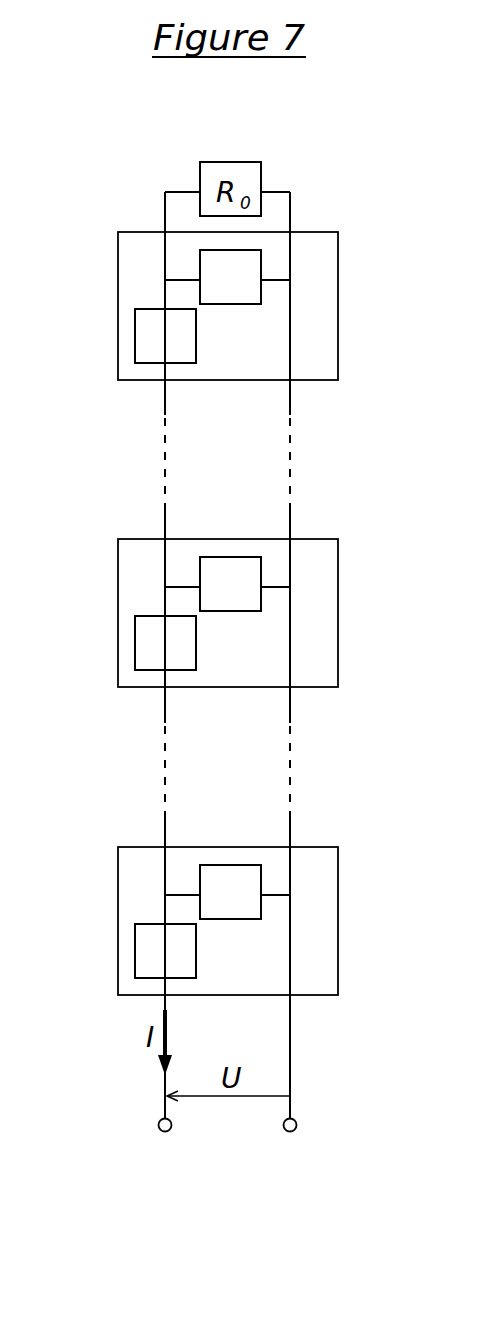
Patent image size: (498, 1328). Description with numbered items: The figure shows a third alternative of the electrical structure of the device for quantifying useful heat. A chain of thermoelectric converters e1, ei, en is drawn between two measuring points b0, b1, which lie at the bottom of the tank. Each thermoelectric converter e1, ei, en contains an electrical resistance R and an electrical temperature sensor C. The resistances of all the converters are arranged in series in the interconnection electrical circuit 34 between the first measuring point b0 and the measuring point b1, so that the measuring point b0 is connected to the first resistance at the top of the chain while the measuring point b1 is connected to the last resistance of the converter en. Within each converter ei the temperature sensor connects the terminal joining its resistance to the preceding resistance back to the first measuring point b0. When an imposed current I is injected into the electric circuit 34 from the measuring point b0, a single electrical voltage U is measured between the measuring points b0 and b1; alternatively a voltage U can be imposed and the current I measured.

The interconnection electrical circuit 34 is at (290, 1060).
The thermoelectric converter e1 is at (118, 313).
The thermoelectric converter ei is at (118, 620).
The thermoelectric converter en is at (118, 928).
The measuring point b1 is at (166, 1149).
The first measuring point b0 is at (300, 1149).